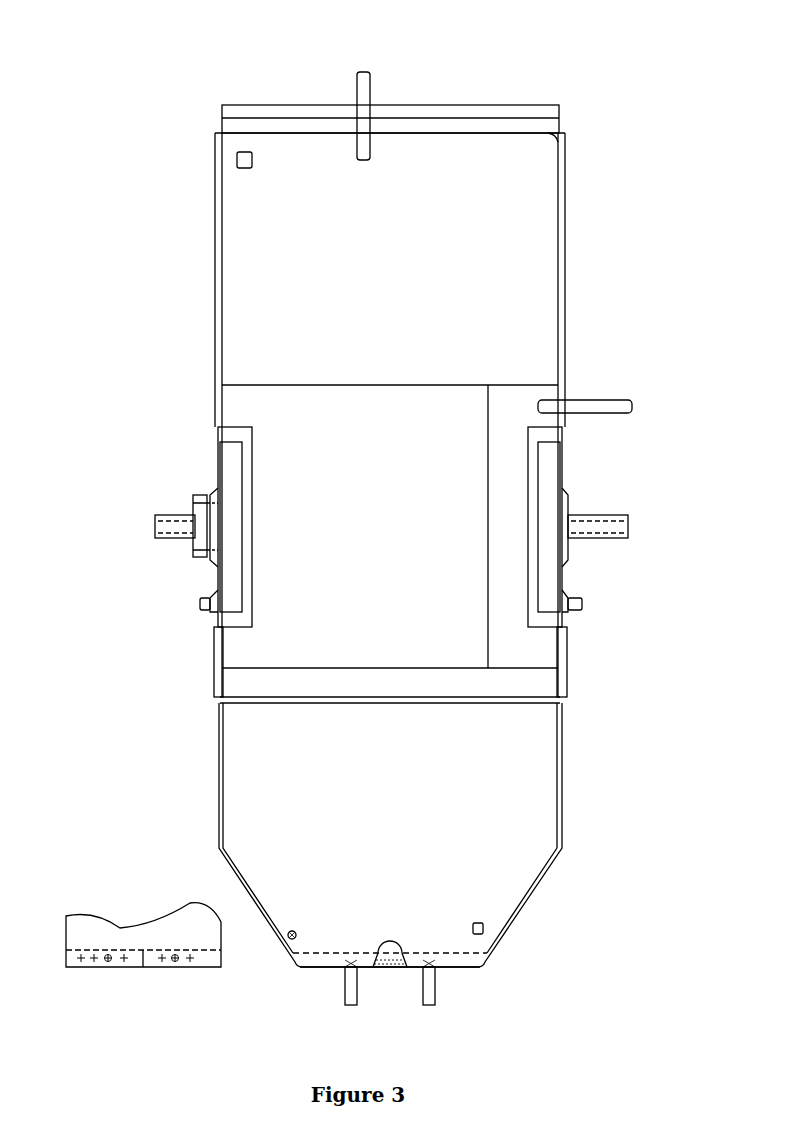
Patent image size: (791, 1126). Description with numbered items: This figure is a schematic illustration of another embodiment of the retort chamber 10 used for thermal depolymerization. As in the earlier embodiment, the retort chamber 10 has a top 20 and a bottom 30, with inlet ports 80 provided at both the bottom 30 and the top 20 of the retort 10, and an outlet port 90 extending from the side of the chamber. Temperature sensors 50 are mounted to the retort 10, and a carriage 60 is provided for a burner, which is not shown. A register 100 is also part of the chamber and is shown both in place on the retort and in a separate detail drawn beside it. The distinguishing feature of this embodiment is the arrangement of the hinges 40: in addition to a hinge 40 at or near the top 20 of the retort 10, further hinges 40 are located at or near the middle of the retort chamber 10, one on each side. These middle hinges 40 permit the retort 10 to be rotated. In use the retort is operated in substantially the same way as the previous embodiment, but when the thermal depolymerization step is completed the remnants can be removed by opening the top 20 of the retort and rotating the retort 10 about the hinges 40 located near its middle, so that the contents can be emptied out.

The retort chamber 10 is at (178, 247).
The top 20 is at (473, 86).
The bottom 30 is at (457, 970).
The hinge 40 is at (543, 143).
The temperature sensors 50 is at (243, 178).
The carriage 60 is at (297, 930).
The inlet ports 80 is at (363, 66).
The outlet port 90 is at (608, 367).
The register 100 is at (373, 912).